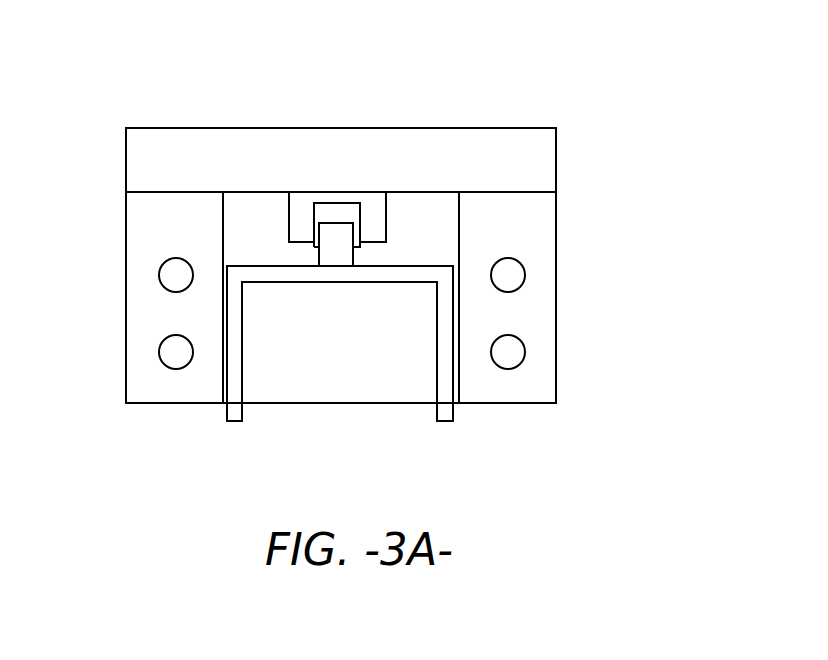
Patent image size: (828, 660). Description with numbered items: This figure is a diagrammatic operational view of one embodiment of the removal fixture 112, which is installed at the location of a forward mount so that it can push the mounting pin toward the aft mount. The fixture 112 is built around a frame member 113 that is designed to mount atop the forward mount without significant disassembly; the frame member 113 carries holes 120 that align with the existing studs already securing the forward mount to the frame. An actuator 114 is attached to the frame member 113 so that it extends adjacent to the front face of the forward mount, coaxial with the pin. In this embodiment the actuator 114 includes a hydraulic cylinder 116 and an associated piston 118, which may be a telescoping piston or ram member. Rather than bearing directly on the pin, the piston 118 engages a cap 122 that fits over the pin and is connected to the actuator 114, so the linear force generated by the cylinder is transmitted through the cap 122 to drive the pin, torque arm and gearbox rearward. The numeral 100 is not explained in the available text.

The mounting bracket assembly 100 is at (605, 131).
The removal fixture 112 is at (158, 128).
The frame member 113 is at (126, 374).
The actuator 114 is at (344, 186).
The hydraulic cylinder 116 is at (386, 222).
The piston 118 is at (319, 259).
The holes 120 is at (170, 278).
The cap 122 is at (242, 291).